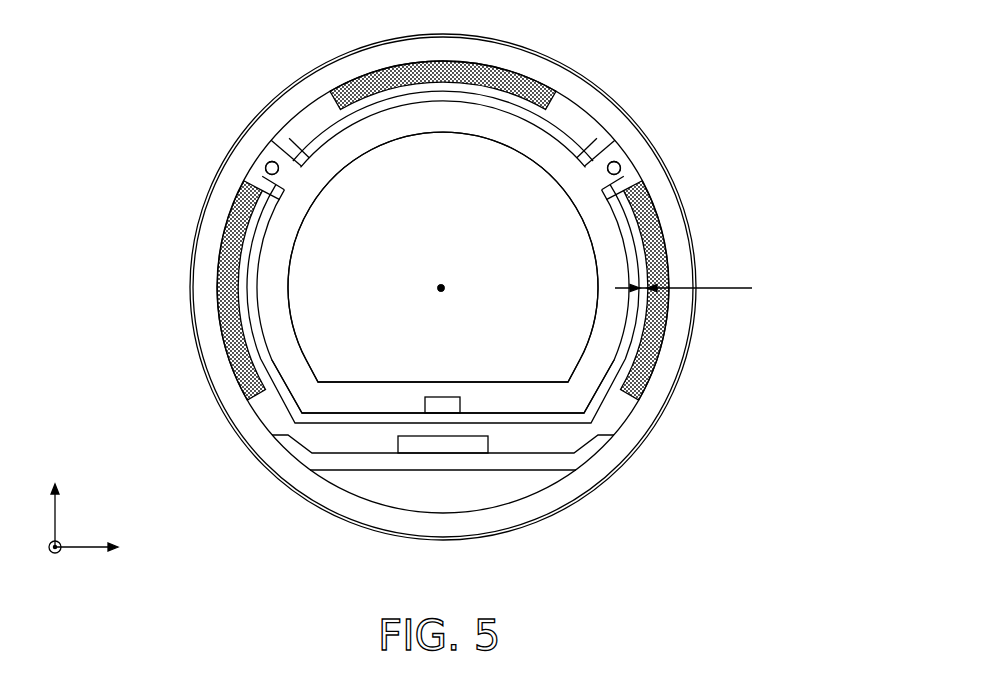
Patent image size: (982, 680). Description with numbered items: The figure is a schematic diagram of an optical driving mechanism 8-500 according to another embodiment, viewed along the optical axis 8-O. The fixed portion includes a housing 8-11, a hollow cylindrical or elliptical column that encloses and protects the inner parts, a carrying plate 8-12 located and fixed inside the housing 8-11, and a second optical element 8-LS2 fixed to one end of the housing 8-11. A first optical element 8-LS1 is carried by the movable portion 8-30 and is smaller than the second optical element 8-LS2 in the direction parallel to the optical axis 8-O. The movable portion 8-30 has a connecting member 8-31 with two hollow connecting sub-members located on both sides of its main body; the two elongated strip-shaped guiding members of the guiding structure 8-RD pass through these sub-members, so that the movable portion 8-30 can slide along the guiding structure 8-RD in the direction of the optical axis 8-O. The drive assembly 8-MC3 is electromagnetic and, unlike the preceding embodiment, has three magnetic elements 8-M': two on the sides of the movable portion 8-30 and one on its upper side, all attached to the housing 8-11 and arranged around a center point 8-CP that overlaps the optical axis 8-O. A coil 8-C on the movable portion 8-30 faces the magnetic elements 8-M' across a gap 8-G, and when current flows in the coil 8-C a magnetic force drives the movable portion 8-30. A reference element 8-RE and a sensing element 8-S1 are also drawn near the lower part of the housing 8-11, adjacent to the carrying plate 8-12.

The optical driving mechanism 8-500 is at (106, 28).
The housing 8-11 is at (543, 67).
The carrying plate 8-12 is at (538, 468).
The second optical element 8-LS2 is at (617, 98).
The first optical element 8-LS1 is at (368, 312).
The movable portion 8-30 is at (270, 302).
The connecting member 8-31 is at (254, 160).
The guiding structure 8-RD is at (265, 168).
The magnetic element 8-M' is at (441, 214).
The coil 8-C is at (253, 260).
The drive assembly 8-MC3 is at (791, 42).
The gap 8-G is at (683, 276).
The optical axis 8-O is at (468, 274).
The center point 8-CP is at (473, 304).
The reference element 8-RE is at (442, 403).
The sensing element 8-S1 is at (442, 445).